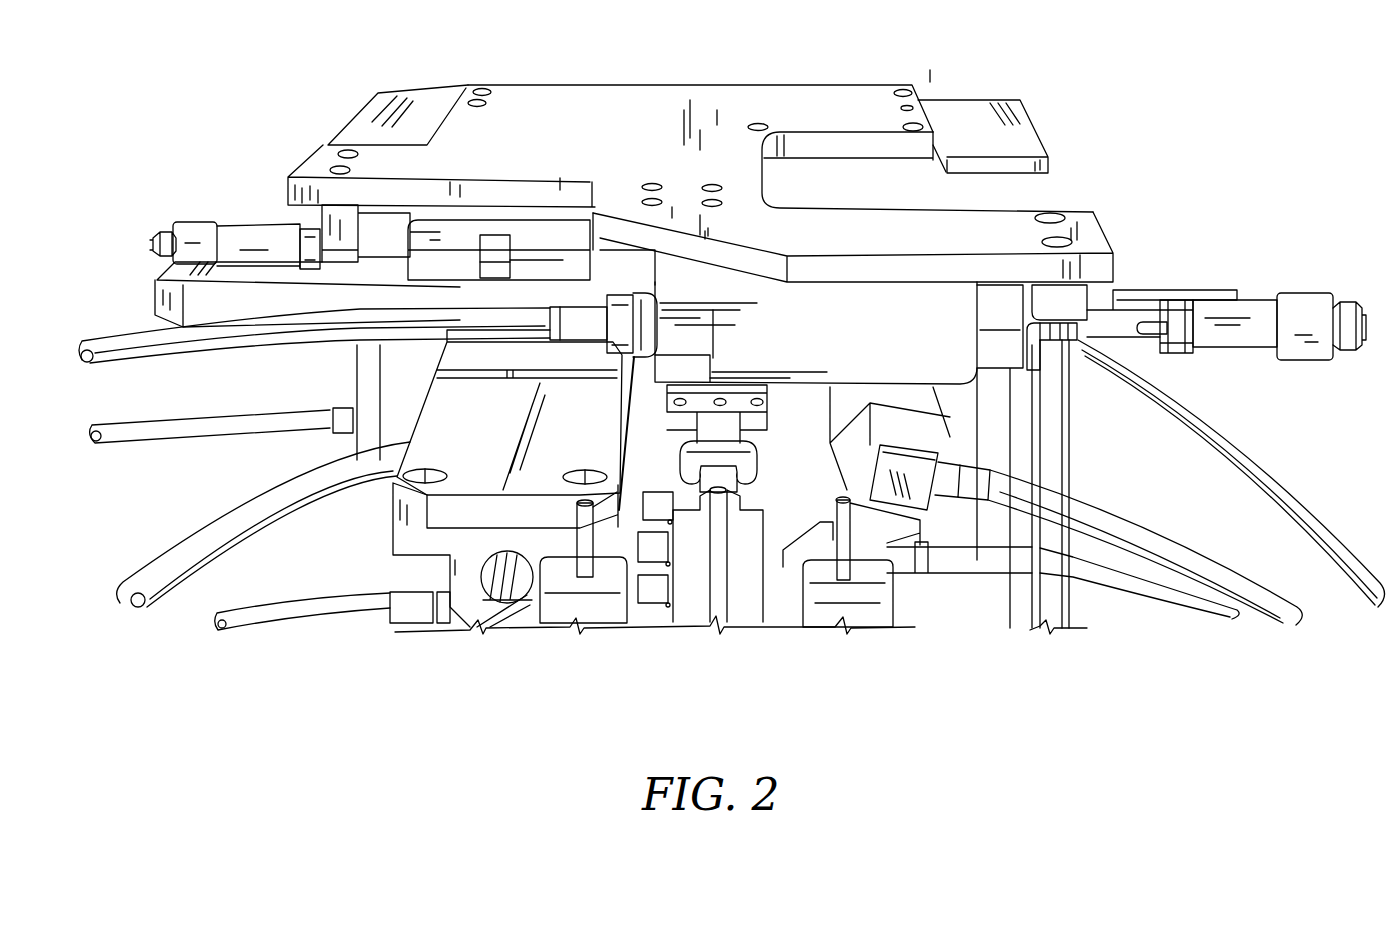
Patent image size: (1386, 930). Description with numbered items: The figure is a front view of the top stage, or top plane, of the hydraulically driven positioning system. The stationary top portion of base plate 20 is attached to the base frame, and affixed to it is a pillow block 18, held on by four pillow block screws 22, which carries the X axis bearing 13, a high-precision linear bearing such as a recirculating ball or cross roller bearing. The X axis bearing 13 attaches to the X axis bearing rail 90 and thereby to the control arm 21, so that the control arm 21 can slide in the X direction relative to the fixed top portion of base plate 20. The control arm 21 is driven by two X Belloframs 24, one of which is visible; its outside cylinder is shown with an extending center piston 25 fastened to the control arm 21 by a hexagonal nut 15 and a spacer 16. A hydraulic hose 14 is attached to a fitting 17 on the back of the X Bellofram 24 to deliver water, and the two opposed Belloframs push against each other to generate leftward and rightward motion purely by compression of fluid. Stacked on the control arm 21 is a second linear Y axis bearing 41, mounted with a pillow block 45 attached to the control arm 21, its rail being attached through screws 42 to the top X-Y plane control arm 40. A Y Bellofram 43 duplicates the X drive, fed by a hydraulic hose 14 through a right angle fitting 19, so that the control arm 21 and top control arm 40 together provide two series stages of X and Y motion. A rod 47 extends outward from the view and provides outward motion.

The X axis bearing 13 is at (565, 267).
The hydraulic hose 14 is at (183, 420).
The hexagonal nut 15 is at (1167, 300).
The spacer 16 is at (1253, 340).
The fitting 17 is at (641, 318).
The pillow block 18 is at (628, 263).
The right angle fitting 19 is at (903, 520).
The top portion of base plate 20 is at (700, 100).
The control arm 21 is at (205, 222).
The pillow block screws 22 is at (652, 180).
The X Bellofram 24 is at (998, 350).
The center piston 25 is at (1120, 320).
The top X-Y plane control arm 40 is at (688, 587).
The Y axis bearing 41 is at (720, 470).
The screws 42 is at (724, 442).
The Y Bellofram 43 is at (900, 425).
The pillow block 45 is at (672, 496).
The rod 47 is at (510, 552).
The X axis bearing rail 90 is at (525, 253).